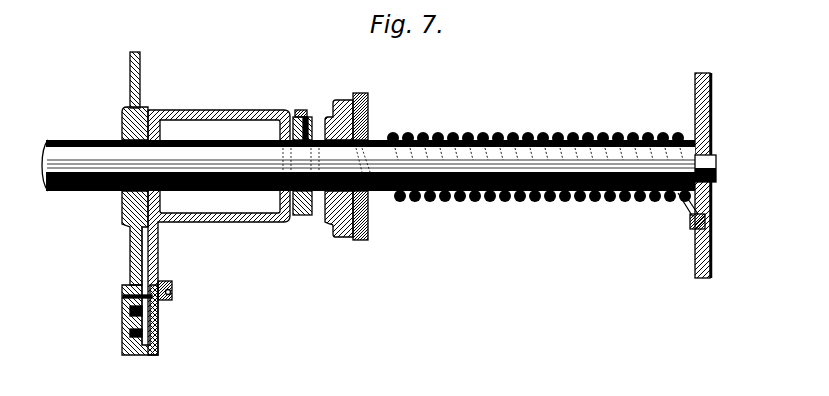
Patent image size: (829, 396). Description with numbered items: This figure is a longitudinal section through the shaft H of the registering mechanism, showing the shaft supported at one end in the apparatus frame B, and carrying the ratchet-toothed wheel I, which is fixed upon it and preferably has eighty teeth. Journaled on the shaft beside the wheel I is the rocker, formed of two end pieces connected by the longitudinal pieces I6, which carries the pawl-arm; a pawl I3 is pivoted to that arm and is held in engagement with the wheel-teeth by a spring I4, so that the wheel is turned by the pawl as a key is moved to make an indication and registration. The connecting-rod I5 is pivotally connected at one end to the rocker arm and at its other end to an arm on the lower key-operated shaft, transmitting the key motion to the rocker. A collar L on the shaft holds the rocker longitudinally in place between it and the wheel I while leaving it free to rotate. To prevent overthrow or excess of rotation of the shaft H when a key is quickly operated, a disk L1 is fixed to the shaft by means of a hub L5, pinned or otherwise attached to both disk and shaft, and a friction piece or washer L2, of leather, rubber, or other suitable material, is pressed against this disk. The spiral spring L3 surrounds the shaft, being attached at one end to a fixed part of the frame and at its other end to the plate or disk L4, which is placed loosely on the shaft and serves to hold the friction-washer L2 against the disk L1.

The ratchet-toothed wheel I is at (130, 96).
The shaft H is at (85, 140).
The longitudinal pieces I6 is at (238, 110).
The collar L is at (300, 215).
The hub L5 is at (332, 120).
The disk L1 is at (341, 229).
The plate or disk L4 is at (368, 114).
The friction piece or washer L2 is at (368, 216).
The spiral spring L3 is at (540, 201).
The frame B is at (712, 127).
The connecting-rod I5 is at (170, 284).
The pawl I3 is at (124, 322).
The spring I4 is at (124, 344).